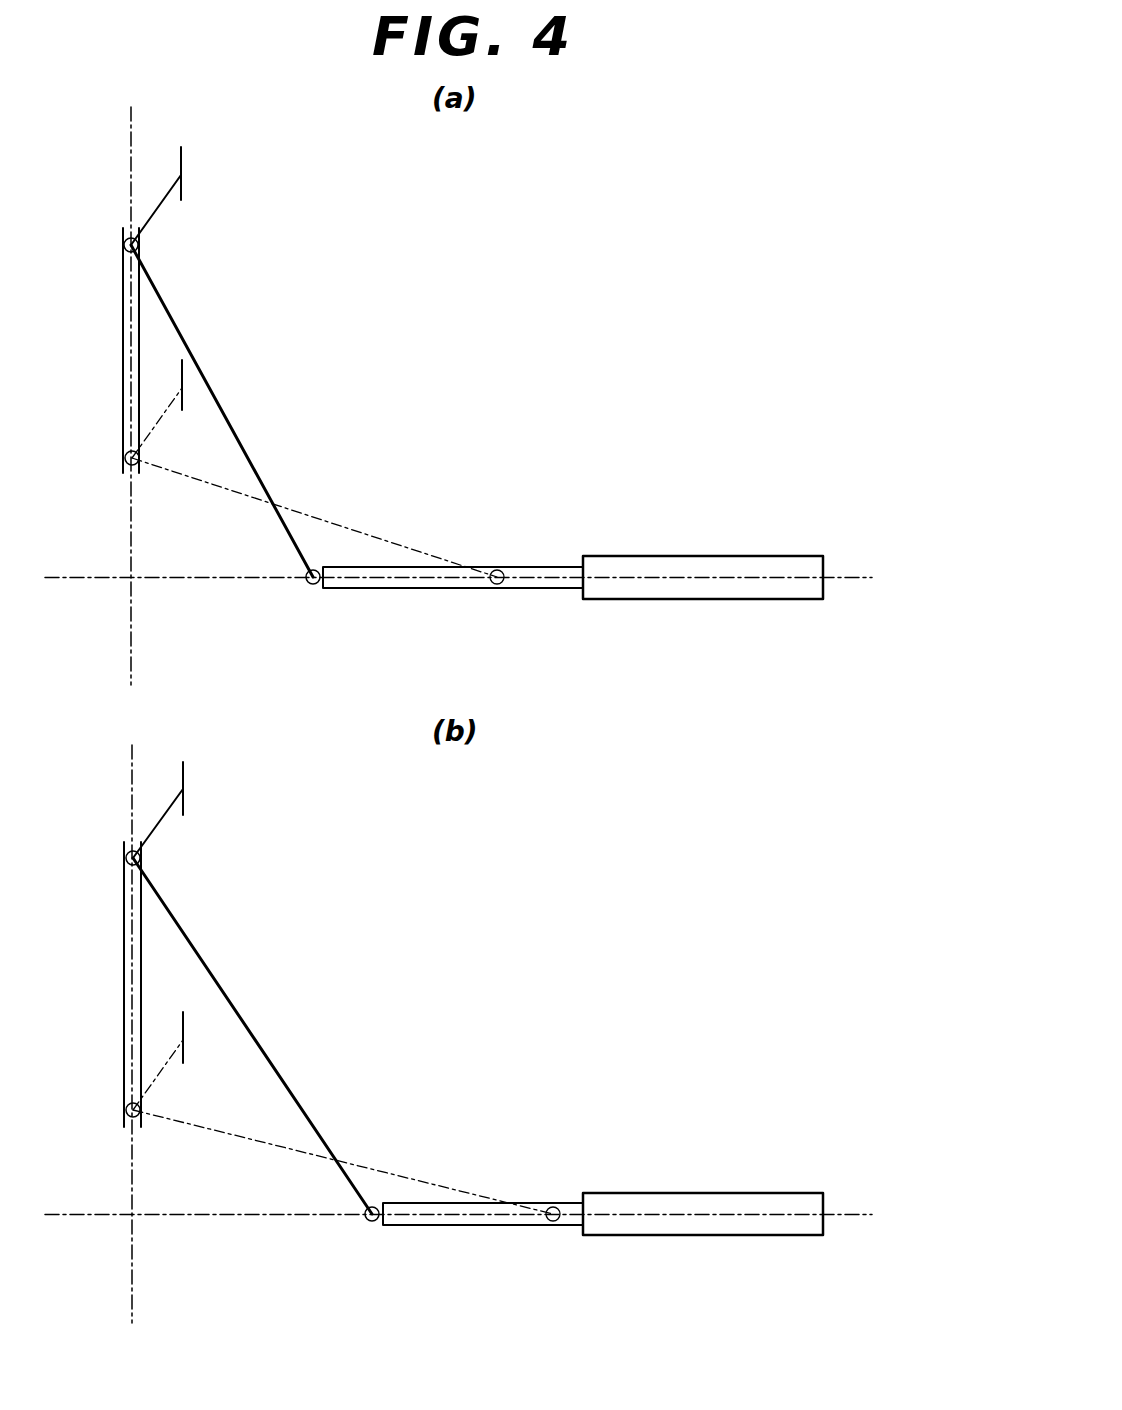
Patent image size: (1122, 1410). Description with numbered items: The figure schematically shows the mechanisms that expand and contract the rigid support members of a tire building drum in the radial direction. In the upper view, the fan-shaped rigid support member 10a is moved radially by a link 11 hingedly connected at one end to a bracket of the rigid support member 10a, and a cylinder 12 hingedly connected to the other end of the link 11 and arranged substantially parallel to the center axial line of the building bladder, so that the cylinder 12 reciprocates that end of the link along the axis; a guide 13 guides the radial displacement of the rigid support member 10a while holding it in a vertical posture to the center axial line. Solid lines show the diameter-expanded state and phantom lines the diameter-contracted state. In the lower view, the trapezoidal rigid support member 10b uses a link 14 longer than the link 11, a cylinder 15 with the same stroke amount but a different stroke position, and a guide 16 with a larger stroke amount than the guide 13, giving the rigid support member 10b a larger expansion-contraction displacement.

The fan-shaped rigid support member 10a is at (194, 168).
The trapezoidal rigid support member 10b is at (196, 786).
The link 11 is at (208, 388).
The cylinder 12 is at (555, 556).
The guide 13 is at (123, 262).
The link 14 is at (257, 1038).
The cylinder 15 is at (555, 1194).
The guide 16 is at (124, 903).